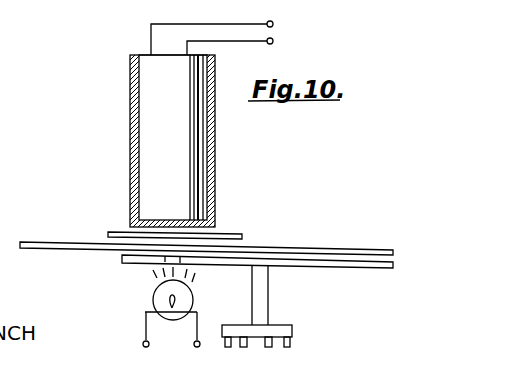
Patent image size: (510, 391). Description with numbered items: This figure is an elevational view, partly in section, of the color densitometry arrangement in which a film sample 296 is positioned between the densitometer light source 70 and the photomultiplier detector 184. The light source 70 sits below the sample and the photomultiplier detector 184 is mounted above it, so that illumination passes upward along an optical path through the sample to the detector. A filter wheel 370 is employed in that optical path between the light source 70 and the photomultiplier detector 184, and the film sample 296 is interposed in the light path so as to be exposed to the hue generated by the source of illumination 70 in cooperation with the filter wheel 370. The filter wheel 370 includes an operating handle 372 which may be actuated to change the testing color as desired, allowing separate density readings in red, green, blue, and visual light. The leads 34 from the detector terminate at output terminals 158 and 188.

The signal leads 34 is at (165, 27).
The detector output terminal 158 is at (273, 24).
The detector output terminal 188 is at (273, 42).
The photomultiplier detector 184 is at (130, 133).
The film sample 296 is at (232, 232).
The light source 70 is at (155, 300).
The filter wheel 370 is at (328, 268).
The operating handle 372 is at (268, 347).